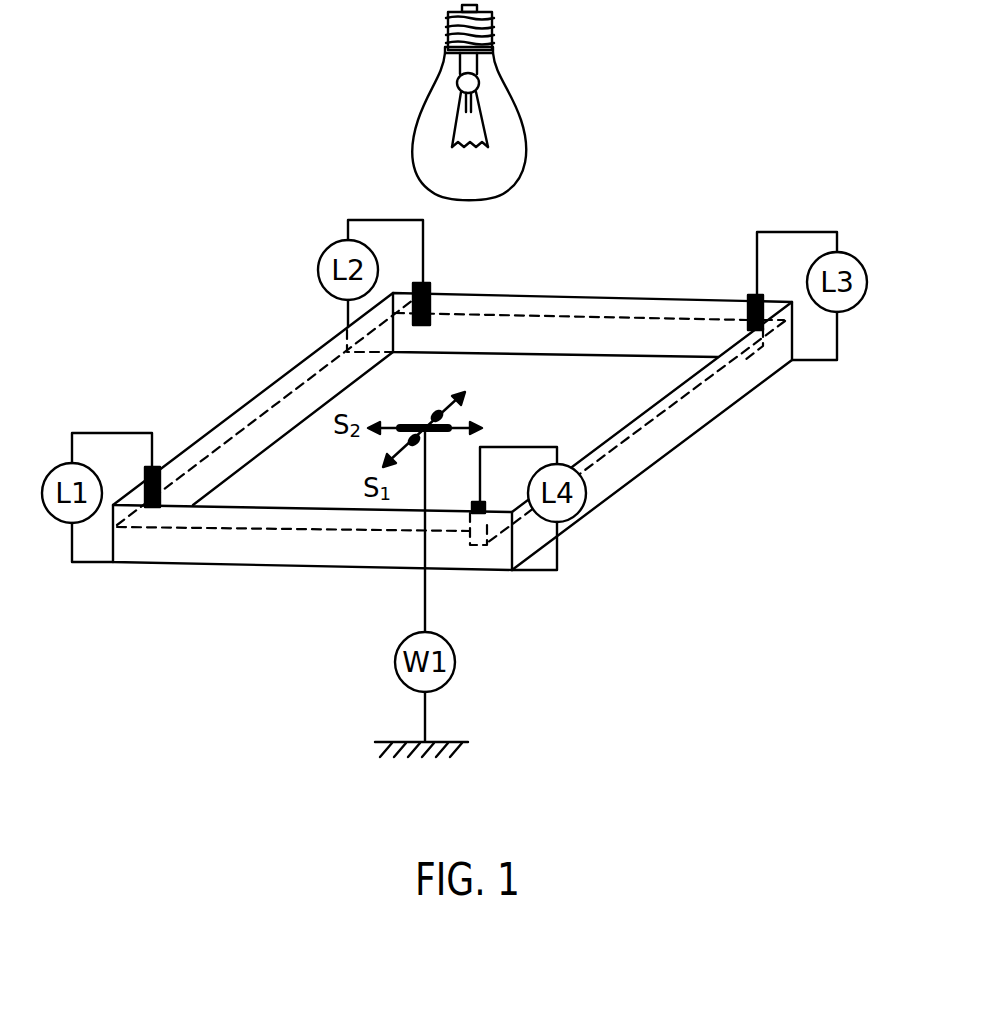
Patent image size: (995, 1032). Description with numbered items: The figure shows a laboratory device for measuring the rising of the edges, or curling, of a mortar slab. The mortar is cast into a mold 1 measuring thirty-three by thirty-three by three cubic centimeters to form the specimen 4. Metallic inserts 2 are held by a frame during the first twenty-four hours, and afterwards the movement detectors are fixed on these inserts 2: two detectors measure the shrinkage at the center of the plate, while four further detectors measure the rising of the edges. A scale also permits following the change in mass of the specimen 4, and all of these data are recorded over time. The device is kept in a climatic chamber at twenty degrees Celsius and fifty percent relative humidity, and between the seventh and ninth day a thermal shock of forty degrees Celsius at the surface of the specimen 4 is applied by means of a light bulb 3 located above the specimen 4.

The mold 1 is at (704, 435).
The metallic inserts 2 is at (430, 292).
The light bulb 3 is at (520, 113).
The specimen 4 is at (538, 392).